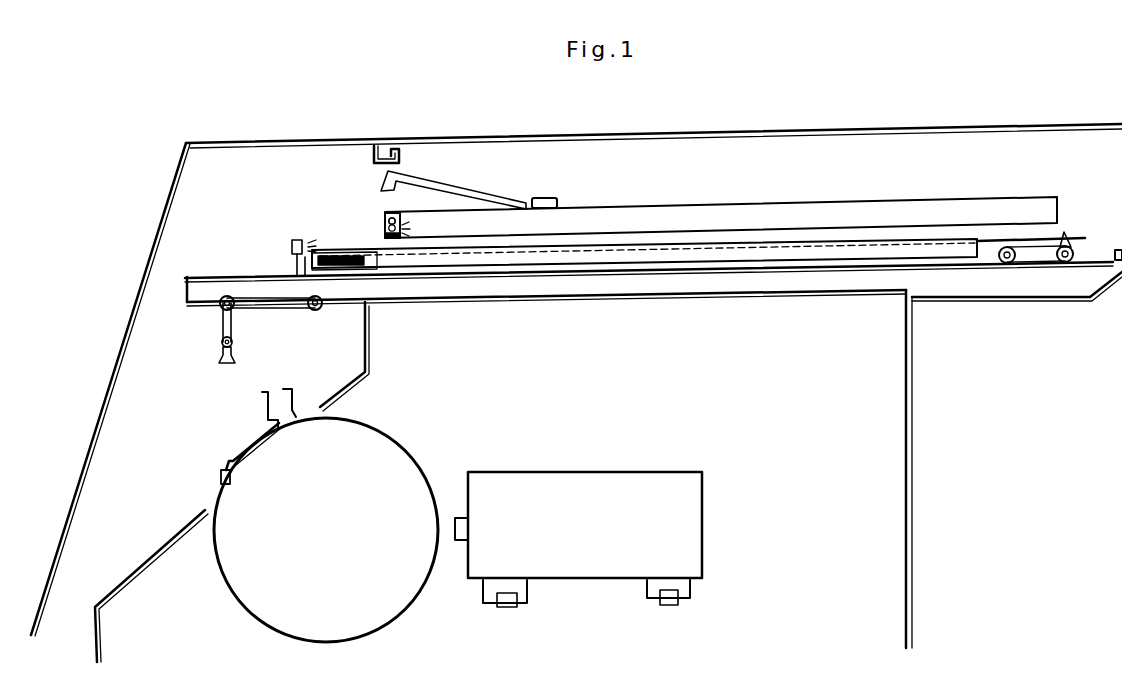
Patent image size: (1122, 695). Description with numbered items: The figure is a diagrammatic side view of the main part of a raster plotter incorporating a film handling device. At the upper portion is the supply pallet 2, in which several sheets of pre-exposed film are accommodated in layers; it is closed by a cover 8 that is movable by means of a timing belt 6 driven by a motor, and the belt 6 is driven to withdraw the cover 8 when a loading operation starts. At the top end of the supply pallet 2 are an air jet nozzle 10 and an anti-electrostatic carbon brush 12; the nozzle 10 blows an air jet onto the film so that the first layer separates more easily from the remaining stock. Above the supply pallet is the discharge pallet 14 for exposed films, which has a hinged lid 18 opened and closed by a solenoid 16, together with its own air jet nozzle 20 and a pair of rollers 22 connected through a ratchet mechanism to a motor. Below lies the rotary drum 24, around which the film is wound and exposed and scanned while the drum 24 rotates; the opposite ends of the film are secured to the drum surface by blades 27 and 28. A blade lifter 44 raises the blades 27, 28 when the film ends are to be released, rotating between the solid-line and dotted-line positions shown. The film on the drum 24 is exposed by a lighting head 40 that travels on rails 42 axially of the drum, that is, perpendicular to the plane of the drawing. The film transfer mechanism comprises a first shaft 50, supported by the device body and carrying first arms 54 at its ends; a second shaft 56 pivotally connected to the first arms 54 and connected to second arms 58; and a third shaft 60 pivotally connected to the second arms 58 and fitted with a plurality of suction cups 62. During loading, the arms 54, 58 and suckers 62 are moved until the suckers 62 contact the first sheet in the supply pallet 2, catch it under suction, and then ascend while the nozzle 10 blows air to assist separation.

The supply pallet 2 is at (711, 257).
The belt 6 is at (1037, 244).
The cover 8 is at (1068, 235).
The air jet nozzle 10 is at (307, 245).
The anti-electrostatic carbon brush 12 is at (294, 238).
The discharge pallet 14 is at (637, 210).
The solenoid 16 is at (548, 197).
The lid 18 is at (431, 182).
The air jet nozzle 20 is at (388, 211).
The rollers 22 is at (384, 227).
The rotary drum 24 is at (395, 447).
The blade 27 is at (240, 440).
The blade 28 is at (220, 478).
The lighting head 40 is at (586, 578).
The rails 42 is at (508, 606).
The blade lifter 44 is at (266, 392).
The first shaft 50 is at (322, 310).
The first arms 54 is at (292, 310).
The second shaft 56 is at (234, 308).
The second arms 58 is at (221, 328).
The third shaft 60 is at (221, 346).
The suction cups 62 is at (224, 362).